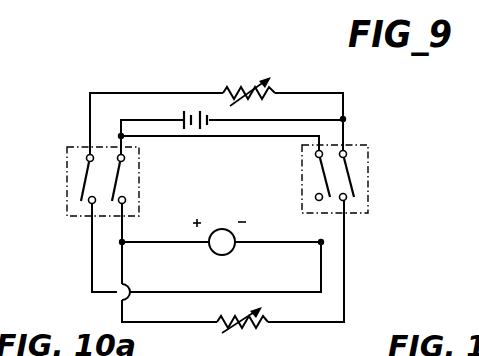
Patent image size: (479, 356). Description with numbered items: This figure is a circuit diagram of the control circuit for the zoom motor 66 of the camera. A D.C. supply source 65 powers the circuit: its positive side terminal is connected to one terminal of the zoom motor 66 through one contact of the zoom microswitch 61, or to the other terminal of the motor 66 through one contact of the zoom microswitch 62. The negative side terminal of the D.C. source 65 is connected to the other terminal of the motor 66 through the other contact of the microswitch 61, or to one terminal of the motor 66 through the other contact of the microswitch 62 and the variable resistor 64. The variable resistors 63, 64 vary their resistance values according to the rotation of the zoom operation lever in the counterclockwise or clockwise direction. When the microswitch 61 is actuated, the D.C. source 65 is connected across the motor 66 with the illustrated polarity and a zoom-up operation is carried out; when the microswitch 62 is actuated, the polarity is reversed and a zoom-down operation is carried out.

The zoom microswitch 61 is at (78, 166).
The zoom microswitch 62 is at (362, 203).
The variable resistor 63 is at (277, 88).
The variable resistor 64 is at (242, 331).
The D.C. supply source 65 is at (198, 110).
The zoom motor 66 is at (219, 240).